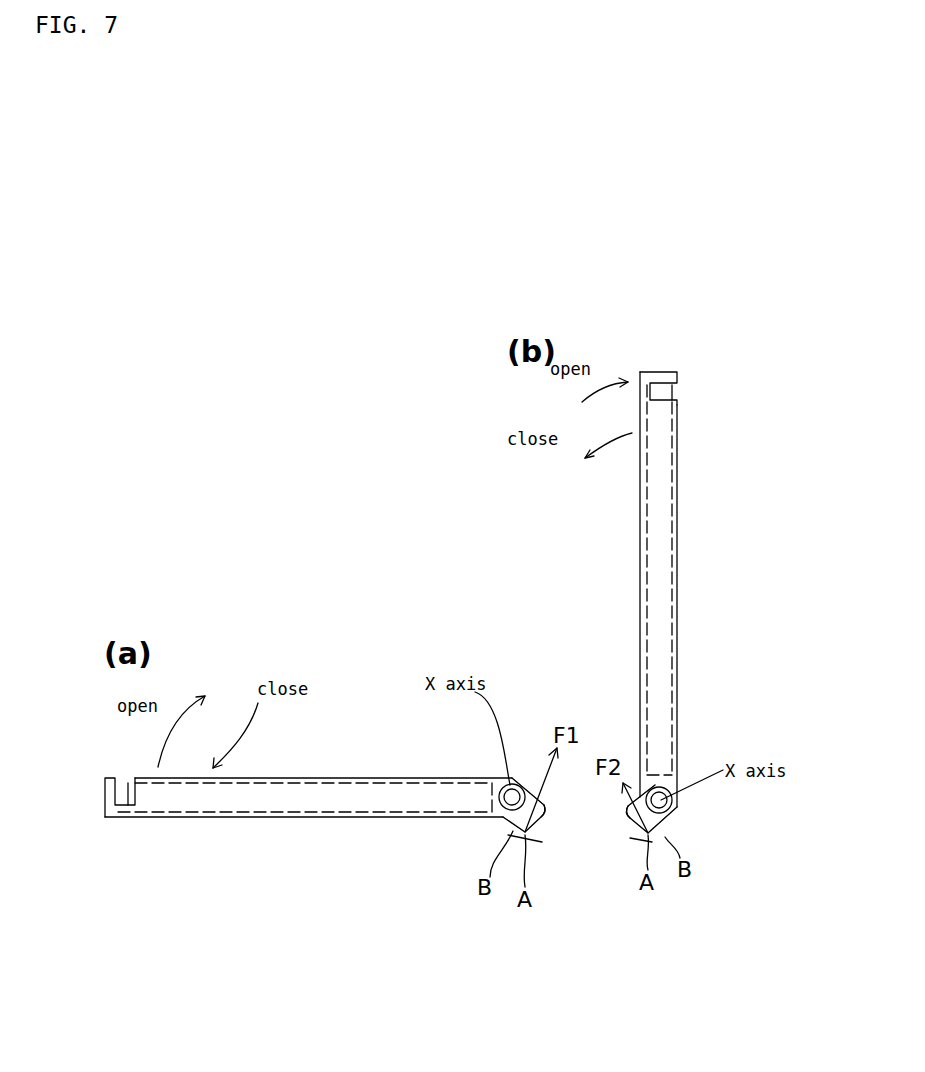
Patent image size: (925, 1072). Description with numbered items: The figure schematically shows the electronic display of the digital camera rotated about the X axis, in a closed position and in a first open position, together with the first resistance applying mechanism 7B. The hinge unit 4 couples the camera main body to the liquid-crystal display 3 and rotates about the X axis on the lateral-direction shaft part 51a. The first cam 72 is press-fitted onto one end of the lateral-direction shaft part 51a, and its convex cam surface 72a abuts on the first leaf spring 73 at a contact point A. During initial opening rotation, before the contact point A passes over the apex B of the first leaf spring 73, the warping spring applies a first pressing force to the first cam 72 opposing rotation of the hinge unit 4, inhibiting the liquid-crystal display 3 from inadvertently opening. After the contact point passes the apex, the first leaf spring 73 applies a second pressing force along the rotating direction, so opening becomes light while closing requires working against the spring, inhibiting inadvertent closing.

In FIG. 7A, the liquid-crystal display 3 is at (170, 814).
In FIG. 7B, the liquid-crystal display 3 is at (673, 393).
In FIG. 7A, the hinge unit 4 is at (322, 778).
In FIG. 7B, the hinge unit 4 is at (678, 443).
In FIG. 7A, the first cam 72 is at (533, 790).
In FIG. 7B, the first cam 72 is at (640, 795).
In FIG. 7A, the cam surface 72a is at (547, 821).
In FIG. 7B, the cam surface 72a is at (648, 838).
In FIG. 7A, the first leaf spring 73 is at (492, 837).
In FIG. 7B, the first leaf spring 73 is at (665, 833).
In FIG. 7A, the lateral-direction shaft part 51a is at (510, 796).
In FIG. 7B, the lateral-direction shaft part 51a is at (659, 793).
In FIG. 7A, the first resistance applying mechanism 7B is at (558, 700).
In FIG. 7B, the first resistance applying mechanism 7B is at (707, 815).